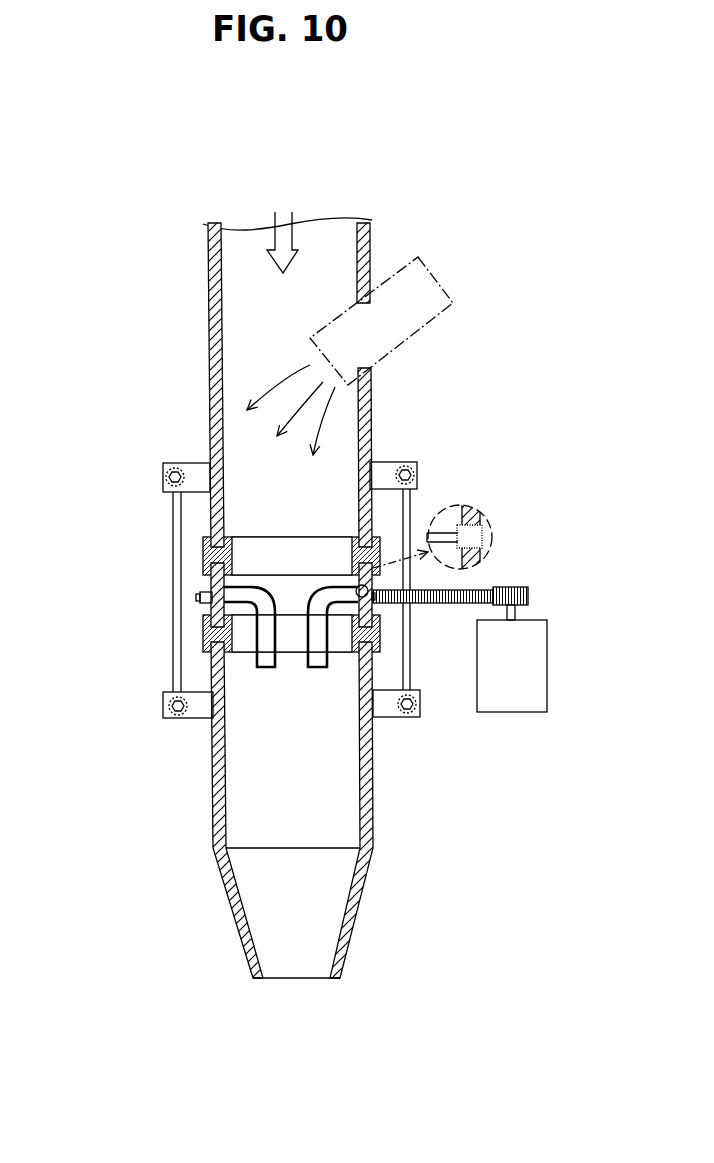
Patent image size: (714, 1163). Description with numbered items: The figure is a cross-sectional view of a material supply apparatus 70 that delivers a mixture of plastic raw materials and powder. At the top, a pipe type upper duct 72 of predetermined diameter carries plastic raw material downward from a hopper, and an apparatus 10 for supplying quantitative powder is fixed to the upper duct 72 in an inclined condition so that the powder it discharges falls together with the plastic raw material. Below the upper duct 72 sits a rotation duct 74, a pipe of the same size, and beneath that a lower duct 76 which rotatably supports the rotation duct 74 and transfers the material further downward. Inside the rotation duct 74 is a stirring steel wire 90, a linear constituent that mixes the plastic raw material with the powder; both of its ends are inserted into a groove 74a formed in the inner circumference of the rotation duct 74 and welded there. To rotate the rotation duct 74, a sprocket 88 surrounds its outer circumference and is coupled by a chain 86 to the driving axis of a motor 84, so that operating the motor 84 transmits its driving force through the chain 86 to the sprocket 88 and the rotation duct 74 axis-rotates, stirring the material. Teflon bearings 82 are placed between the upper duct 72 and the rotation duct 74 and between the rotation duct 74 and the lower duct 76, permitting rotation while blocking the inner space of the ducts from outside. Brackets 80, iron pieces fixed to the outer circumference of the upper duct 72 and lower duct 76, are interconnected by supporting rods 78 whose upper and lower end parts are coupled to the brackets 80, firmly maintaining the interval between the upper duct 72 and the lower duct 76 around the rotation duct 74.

The apparatus for supplying quantitative powder 10 is at (428, 343).
The material supply apparatus 70 is at (133, 428).
The upper duct 72 is at (214, 423).
The rotation duct 74 is at (212, 584).
The groove 74a is at (484, 531).
The lower duct 76 is at (220, 780).
The supporting rods 78 is at (174, 621).
The brackets 80 is at (190, 468).
The Teflon bearings 82 is at (204, 546).
The motor 84 is at (532, 668).
The chain 86 is at (200, 598).
The sprocket 88 is at (205, 600).
The stirring steel wire 90 is at (264, 668).